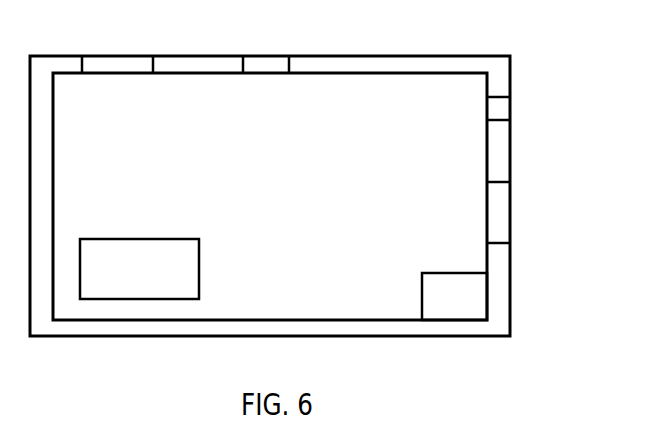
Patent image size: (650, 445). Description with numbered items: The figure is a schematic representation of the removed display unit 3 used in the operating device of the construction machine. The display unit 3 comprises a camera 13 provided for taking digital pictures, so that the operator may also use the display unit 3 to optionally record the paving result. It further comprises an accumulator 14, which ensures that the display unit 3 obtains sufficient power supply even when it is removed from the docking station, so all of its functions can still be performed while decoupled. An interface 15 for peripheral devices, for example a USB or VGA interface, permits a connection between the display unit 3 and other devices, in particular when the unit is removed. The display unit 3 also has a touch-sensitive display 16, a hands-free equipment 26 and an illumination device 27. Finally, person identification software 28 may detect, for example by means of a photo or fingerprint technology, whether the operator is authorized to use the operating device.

The display unit 3 is at (544, 168).
The camera 13 is at (276, 62).
The accumulator 14 is at (110, 290).
The interface 15 is at (505, 107).
The touch-sensitive display 16 is at (451, 72).
The hands-free equipment 26 is at (505, 200).
The illumination device 27 is at (117, 62).
The person identification software 28 is at (478, 292).